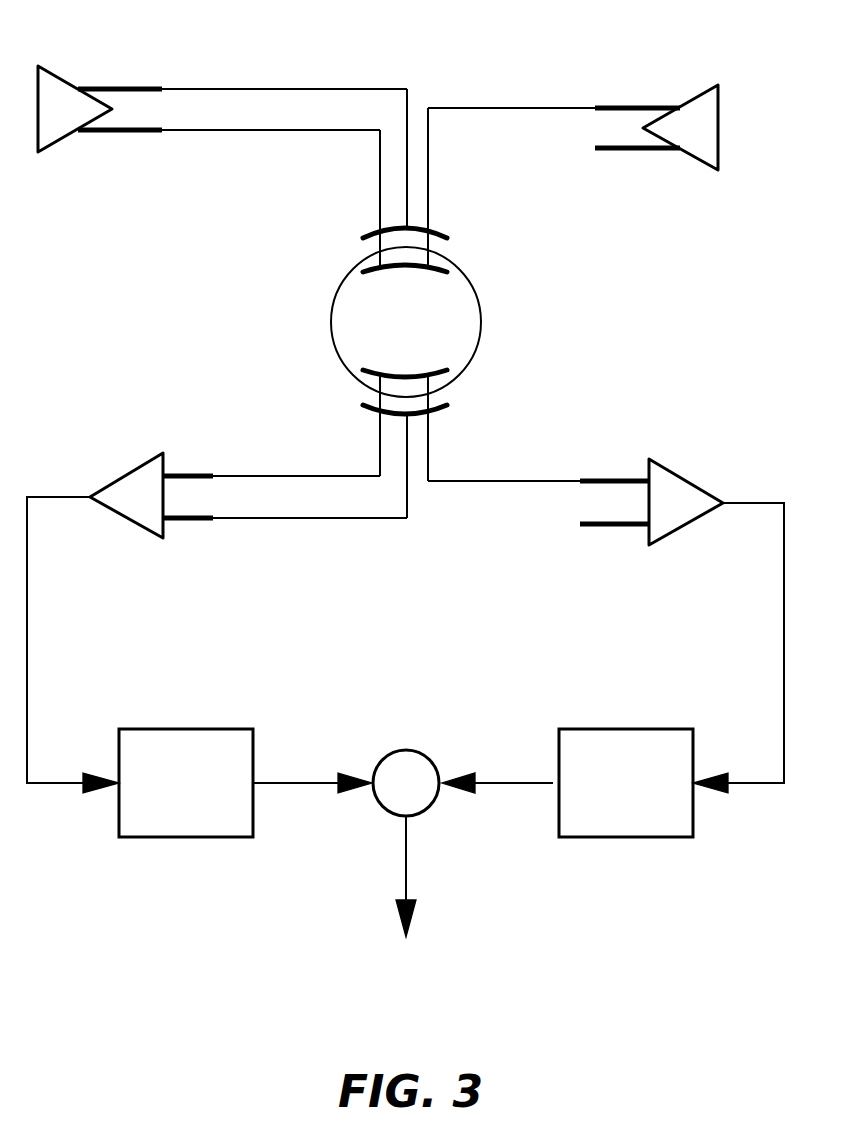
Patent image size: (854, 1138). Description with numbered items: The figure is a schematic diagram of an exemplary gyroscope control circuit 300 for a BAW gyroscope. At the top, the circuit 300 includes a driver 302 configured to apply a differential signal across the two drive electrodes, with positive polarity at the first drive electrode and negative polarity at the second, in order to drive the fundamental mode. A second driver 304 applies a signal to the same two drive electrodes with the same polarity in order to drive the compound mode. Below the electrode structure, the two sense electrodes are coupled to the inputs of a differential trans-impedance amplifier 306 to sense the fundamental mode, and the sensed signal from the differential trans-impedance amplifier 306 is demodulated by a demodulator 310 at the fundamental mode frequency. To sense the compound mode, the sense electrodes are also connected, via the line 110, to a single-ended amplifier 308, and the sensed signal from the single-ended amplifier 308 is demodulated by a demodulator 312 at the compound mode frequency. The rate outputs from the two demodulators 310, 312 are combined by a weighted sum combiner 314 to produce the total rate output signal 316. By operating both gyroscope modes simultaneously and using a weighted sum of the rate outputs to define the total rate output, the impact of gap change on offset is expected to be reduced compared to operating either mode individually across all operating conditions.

The gyroscope control circuit 300 is at (633, 1014).
The driver 302 is at (60, 77).
The driver 304 is at (696, 96).
The differential trans-impedance amplifier 306 is at (120, 478).
The single-ended amplifier 308 is at (684, 476).
The sense signal line 110 is at (517, 481).
The demodulator 310 is at (165, 819).
The demodulator 312 is at (605, 819).
The weighted sum combiner 314 is at (386, 797).
The total rate output signal 316 is at (385, 977).